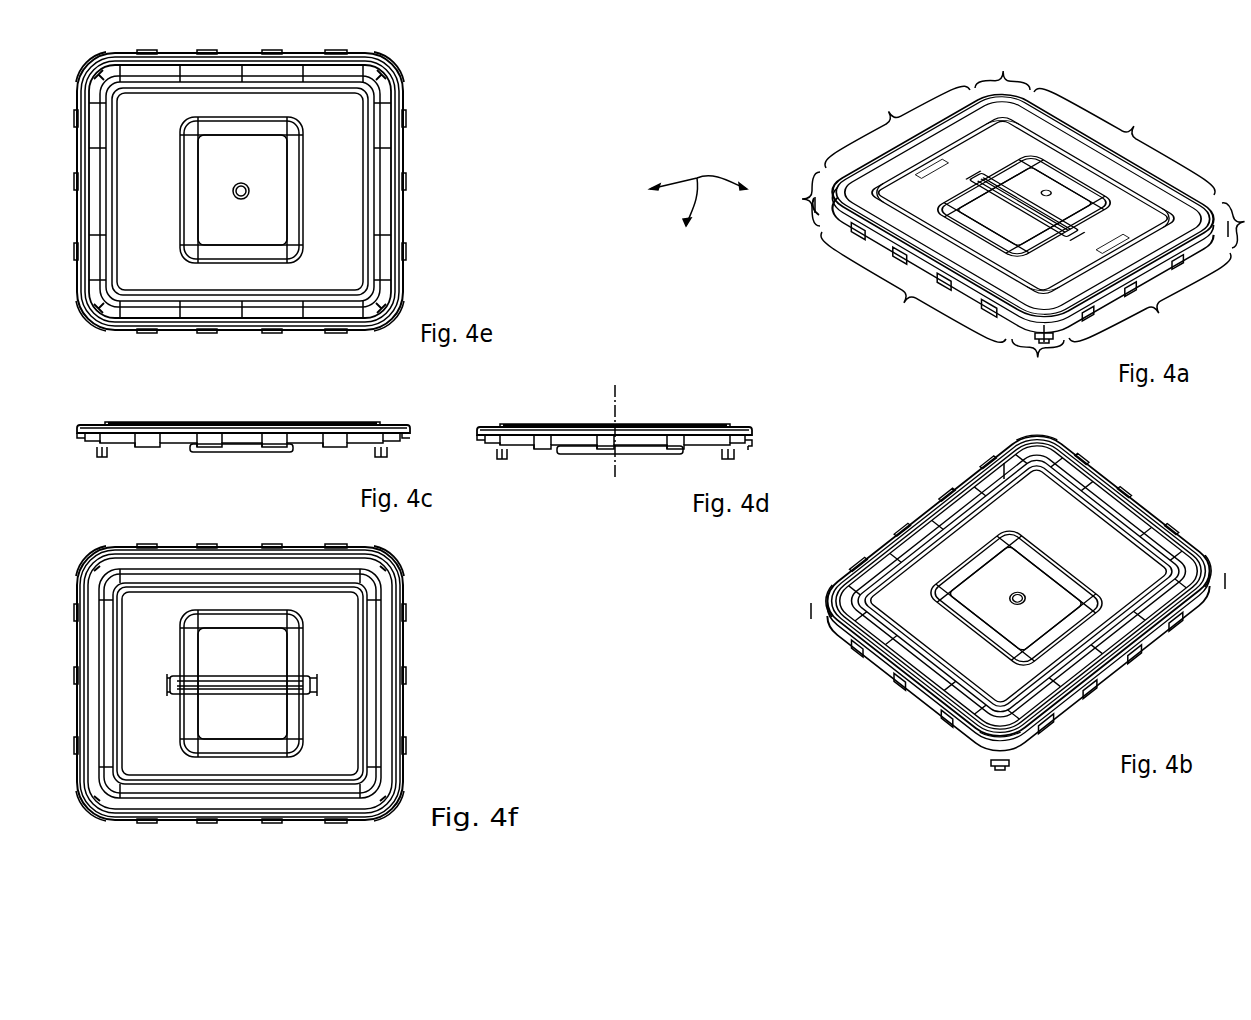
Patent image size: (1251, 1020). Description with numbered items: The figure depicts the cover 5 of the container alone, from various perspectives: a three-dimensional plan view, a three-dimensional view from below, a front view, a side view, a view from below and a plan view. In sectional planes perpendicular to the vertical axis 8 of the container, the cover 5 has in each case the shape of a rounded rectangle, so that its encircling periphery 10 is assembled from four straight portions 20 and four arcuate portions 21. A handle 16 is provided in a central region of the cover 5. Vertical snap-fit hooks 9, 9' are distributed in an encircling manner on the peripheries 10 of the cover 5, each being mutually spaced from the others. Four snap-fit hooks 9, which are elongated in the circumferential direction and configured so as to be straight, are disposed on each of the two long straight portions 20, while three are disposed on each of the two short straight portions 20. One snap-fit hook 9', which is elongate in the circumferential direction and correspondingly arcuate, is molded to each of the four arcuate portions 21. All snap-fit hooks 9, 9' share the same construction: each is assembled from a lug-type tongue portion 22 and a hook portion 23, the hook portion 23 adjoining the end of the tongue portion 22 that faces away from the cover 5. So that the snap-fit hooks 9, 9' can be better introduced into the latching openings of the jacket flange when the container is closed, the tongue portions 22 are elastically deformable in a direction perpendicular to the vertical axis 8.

In FIG. 4a, the cover 5 is at (698, 185).
In FIG. 4d, the vertical axis 8 is at (611, 388).
In FIG. 4e, the snap-fit hook 9 is at (275, 191).
In FIG. 4f, the snap-fit hook 9 is at (275, 683).
In FIG. 4a, the snap-fit hook 9 is at (1021, 234).
In FIG. 4e, the arcuate snap-fit hook 9' is at (276, 67).
In FIG. 4f, the arcuate snap-fit hook 9' is at (276, 549).
In FIG. 4a, the arcuate snap-fit hook 9' is at (790, 235).
In FIG. 4a, the periphery 10 is at (862, 242).
In FIG. 4f, the handle 16 is at (285, 680).
In FIG. 4a, the straight portion 20 is at (1159, 313).
In FIG. 4a, the arcuate portion 21 is at (1228, 170).
In FIG. 4b, the tongue portion 22 is at (866, 657).
In FIG. 4d, the hook portion 23 is at (750, 447).
In FIG. 4b, the hook portion 23 is at (899, 690).